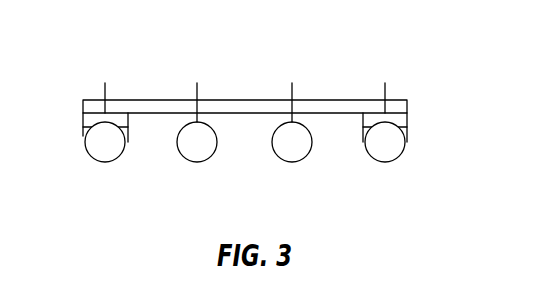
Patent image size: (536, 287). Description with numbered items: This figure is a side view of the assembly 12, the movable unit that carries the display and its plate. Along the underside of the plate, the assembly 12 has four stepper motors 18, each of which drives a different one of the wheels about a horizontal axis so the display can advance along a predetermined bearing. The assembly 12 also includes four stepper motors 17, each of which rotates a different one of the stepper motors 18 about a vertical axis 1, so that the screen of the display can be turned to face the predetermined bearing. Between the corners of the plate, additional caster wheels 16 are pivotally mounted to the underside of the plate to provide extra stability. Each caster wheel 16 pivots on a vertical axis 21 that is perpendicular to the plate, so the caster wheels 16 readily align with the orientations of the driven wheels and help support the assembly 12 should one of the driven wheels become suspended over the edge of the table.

The assembly 12 is at (350, 84).
The stepper motor 17 is at (247, 113).
The stepper motor 18 is at (246, 148).
The caster wheel 16 is at (261, 162).
The vertical axis 1 is at (105, 78).
The vertical axis 21 is at (197, 78).